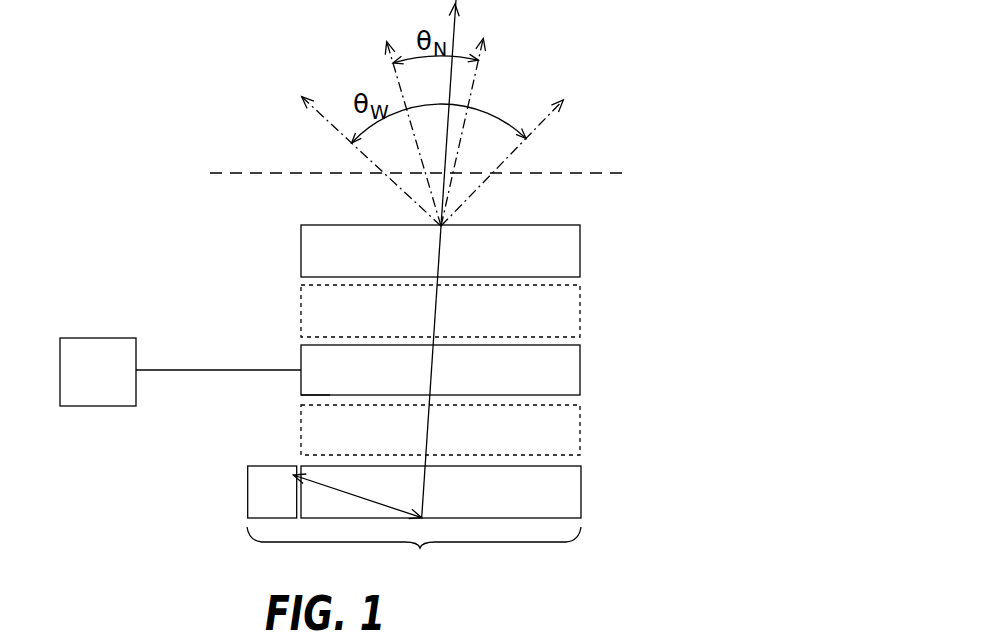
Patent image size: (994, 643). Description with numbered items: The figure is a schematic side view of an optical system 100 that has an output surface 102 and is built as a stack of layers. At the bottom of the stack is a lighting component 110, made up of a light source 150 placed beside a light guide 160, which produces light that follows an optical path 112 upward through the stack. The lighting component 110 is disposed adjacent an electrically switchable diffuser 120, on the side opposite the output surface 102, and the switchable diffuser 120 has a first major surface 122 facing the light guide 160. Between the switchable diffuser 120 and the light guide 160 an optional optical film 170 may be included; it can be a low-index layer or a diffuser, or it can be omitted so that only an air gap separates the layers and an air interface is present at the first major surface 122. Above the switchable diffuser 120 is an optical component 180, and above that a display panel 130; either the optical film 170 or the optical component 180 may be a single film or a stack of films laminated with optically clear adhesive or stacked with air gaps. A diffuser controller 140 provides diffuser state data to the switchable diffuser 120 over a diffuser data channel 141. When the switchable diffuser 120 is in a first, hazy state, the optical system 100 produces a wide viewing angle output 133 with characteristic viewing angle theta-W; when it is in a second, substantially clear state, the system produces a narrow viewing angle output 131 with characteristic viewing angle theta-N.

The optical system 100 is at (88, 210).
The output surface 102 is at (603, 172).
The lighting component 110 is at (414, 553).
The optical path 112 is at (430, 423).
The electrically switchable diffuser 120 is at (566, 371).
The first major surface 122 is at (315, 402).
The display panel 130 is at (566, 255).
The narrow viewing angle output 131 is at (405, 92).
The wide viewing angle output 133 is at (465, 200).
The diffuser controller 140 is at (100, 338).
The diffuser data channel 141 is at (210, 370).
The light source 150 is at (246, 492).
The light guide 160 is at (566, 491).
The optional optical film 170 is at (566, 436).
The optical component 180 is at (566, 312).